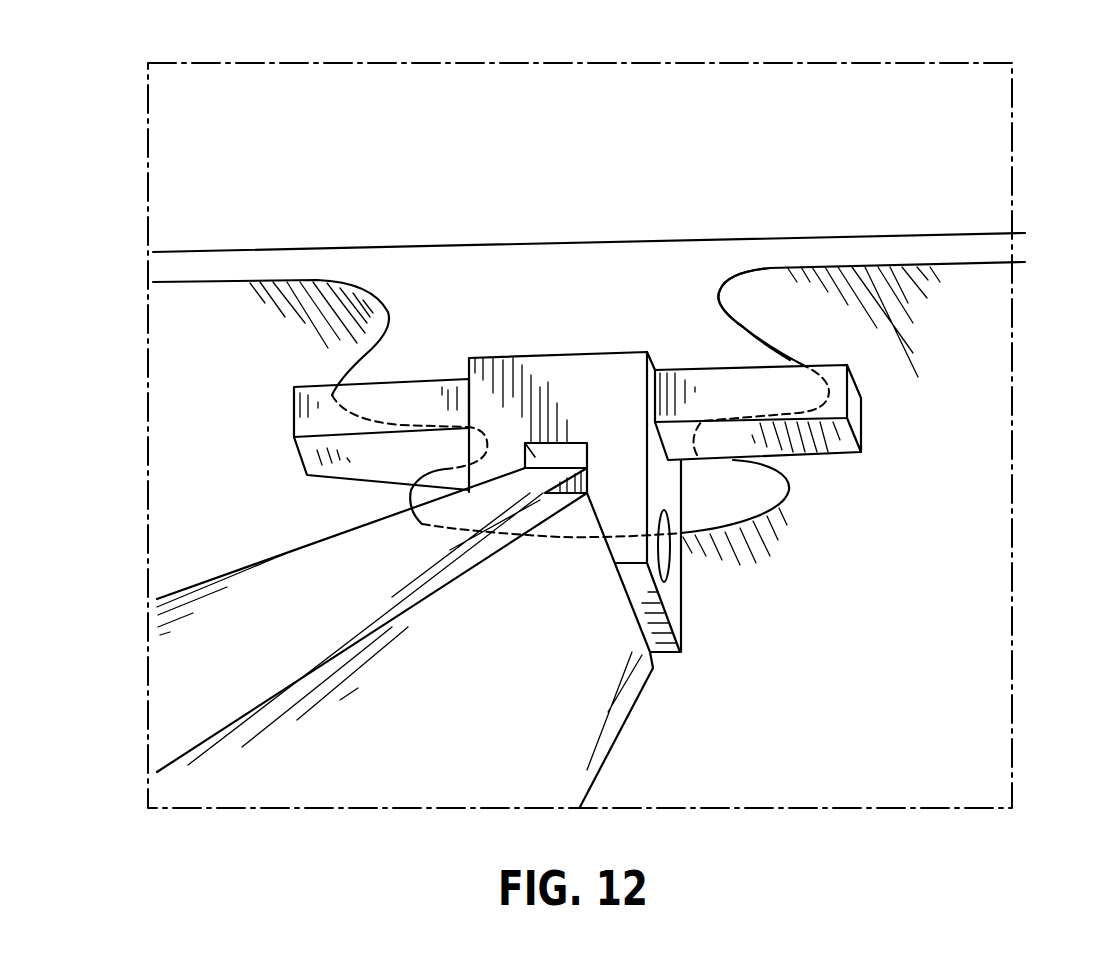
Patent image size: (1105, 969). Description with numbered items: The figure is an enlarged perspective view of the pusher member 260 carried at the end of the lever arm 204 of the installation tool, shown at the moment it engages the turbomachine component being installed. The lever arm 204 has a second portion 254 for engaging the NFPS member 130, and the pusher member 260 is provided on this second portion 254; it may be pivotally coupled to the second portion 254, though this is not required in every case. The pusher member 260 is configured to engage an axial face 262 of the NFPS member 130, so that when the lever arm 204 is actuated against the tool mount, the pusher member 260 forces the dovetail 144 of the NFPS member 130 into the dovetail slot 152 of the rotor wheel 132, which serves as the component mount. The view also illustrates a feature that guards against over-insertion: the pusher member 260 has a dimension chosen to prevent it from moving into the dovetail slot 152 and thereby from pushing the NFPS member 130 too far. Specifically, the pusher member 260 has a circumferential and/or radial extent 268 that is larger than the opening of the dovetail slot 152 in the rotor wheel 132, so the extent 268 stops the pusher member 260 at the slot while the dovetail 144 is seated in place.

The NFPS member 130 is at (623, 298).
The rotor wheel 132 is at (948, 375).
The dovetail 144 is at (695, 347).
The dovetail slot 152 is at (747, 313).
The lever arm 204 is at (518, 760).
The second portion 254 is at (592, 699).
The pusher member 260 is at (512, 387).
The axial face 262 is at (530, 308).
The circumferential and/or radial extent 268 is at (307, 425).